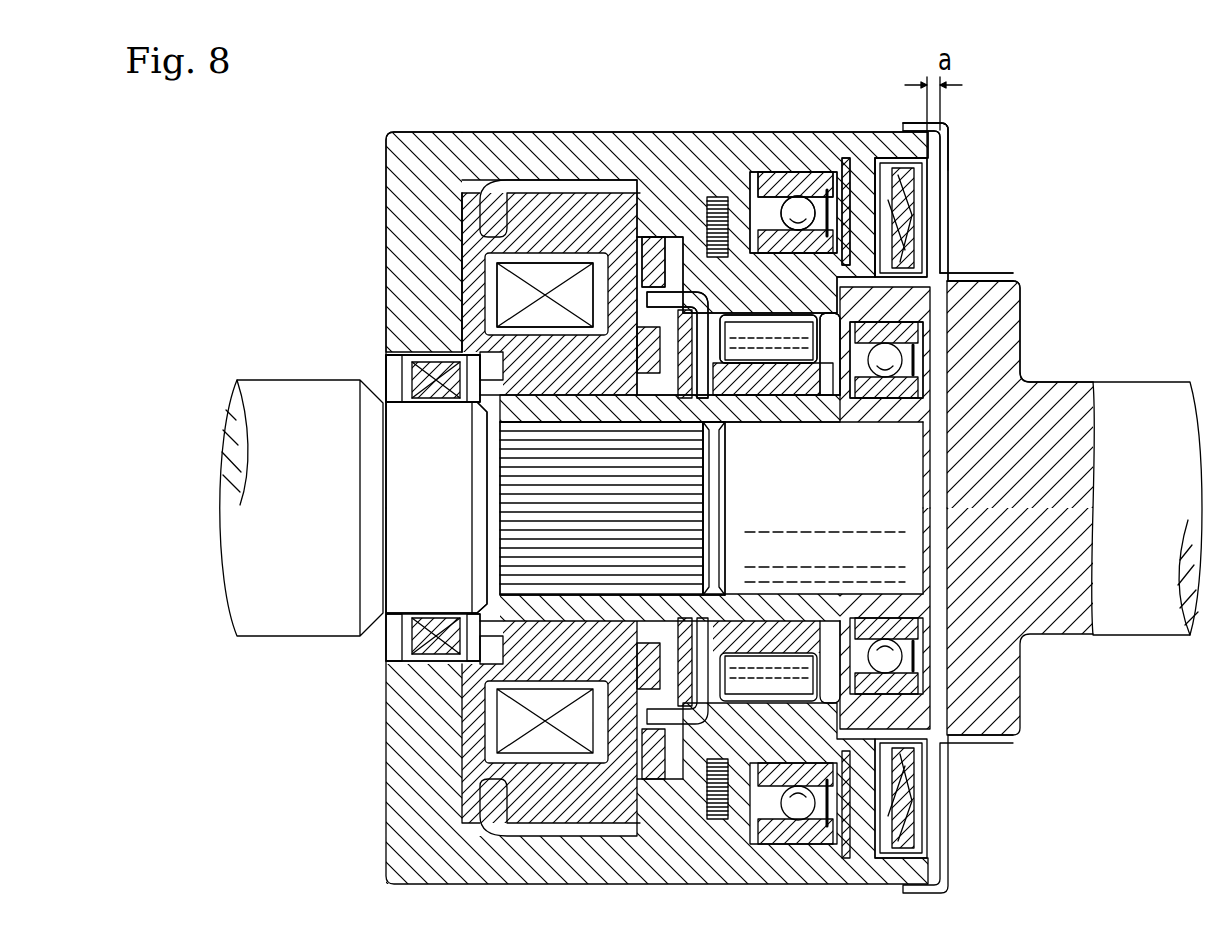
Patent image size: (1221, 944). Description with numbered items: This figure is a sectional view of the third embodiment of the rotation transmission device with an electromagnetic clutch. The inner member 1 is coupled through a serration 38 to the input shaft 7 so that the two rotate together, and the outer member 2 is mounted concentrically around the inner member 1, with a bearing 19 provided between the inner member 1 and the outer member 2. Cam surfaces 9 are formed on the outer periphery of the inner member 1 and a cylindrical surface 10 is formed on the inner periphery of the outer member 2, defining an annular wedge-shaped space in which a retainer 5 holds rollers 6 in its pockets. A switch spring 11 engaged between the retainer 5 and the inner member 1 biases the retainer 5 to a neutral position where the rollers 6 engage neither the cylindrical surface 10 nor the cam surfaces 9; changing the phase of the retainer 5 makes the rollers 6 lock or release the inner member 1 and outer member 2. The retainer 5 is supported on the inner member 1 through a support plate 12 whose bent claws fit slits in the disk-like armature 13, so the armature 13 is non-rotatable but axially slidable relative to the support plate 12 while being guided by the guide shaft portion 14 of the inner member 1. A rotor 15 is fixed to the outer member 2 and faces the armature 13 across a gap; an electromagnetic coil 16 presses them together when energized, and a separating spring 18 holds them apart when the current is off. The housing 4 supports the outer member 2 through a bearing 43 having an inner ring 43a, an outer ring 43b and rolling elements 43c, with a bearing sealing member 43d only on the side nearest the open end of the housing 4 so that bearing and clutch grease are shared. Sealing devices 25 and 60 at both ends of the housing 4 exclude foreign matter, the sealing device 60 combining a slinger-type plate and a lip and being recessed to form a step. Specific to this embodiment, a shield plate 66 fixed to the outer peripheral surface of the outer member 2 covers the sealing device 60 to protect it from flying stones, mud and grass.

The inner member 1 is at (781, 398).
The outer member 2 is at (988, 302).
The housing 4 is at (705, 157).
The retainer 5 is at (965, 275).
The rollers 6 is at (807, 245).
The input shaft 7 is at (290, 428).
The cam surfaces 9 is at (750, 398).
The cylindrical surface 10 is at (740, 197).
The switch spring 11 is at (720, 450).
The support plate 12 is at (688, 298).
The armature 13 is at (652, 243).
The guide shaft portion 14 is at (560, 432).
The rotor 15 is at (543, 223).
The electromagnetic coil 16 is at (507, 287).
The separating spring 18 is at (573, 252).
The bearing 19 is at (930, 363).
The sealing device 25 is at (386, 372).
The serration 38 is at (575, 537).
The bearing 43 is at (810, 162).
The inner ring 43a is at (834, 398).
The outer ring 43b is at (840, 200).
The rolling elements 43c is at (790, 210).
The bearing sealing member 43d is at (944, 122).
The sealing device 60 is at (935, 195).
The shield plate 66 is at (950, 137).